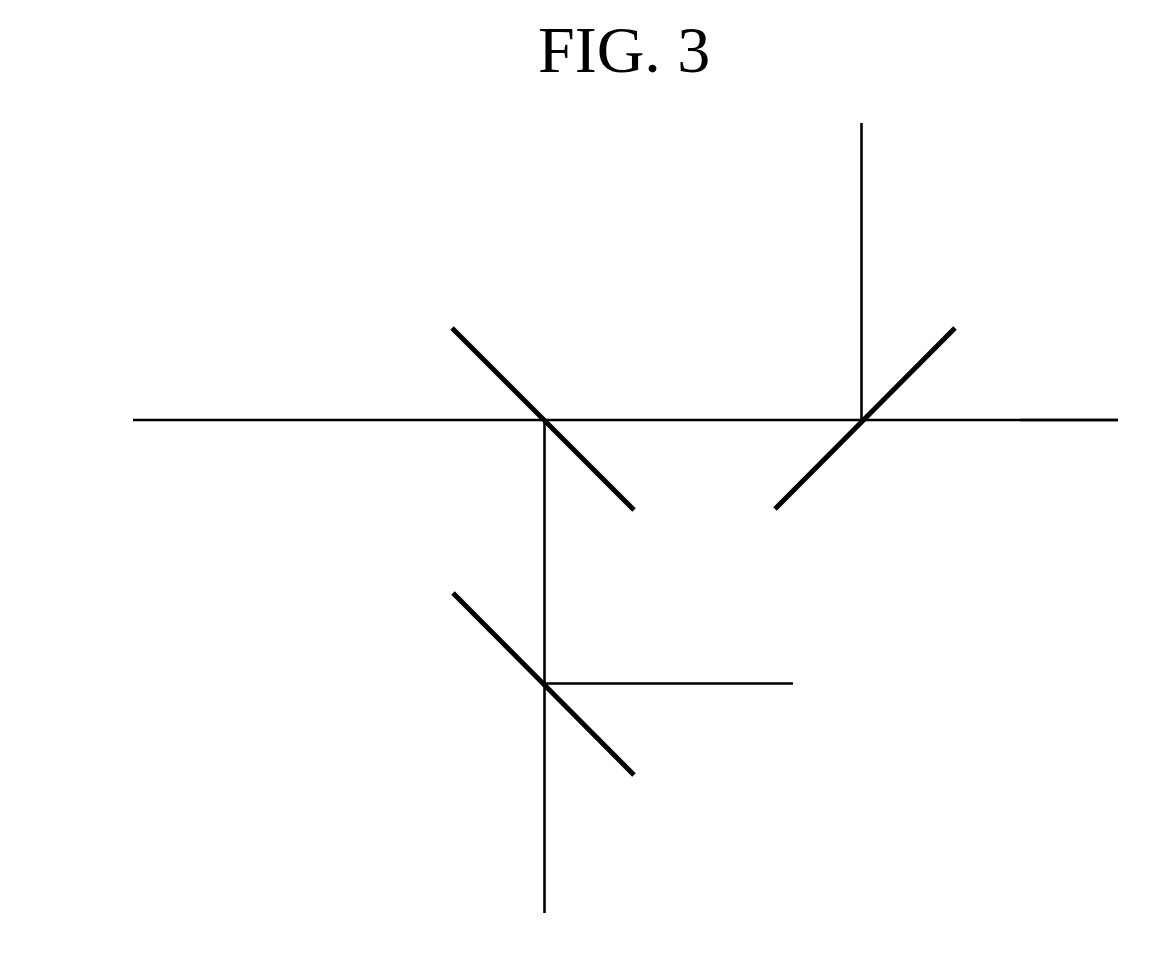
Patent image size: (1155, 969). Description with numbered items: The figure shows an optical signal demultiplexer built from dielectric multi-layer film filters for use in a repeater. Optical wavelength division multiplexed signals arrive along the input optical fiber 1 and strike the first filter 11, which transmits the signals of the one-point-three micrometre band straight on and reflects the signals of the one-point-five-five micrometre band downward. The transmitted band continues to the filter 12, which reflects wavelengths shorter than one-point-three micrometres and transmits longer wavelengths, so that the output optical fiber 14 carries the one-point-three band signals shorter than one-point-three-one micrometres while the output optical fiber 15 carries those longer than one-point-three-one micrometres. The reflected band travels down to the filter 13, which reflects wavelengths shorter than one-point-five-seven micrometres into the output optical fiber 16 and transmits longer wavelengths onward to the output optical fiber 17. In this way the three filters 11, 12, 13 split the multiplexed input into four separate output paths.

The input optical fiber 1 is at (275, 420).
The filter 11 is at (477, 345).
The filter 12 is at (802, 485).
The filter 13 is at (483, 627).
The output optical fiber 14 is at (862, 182).
The output optical fiber 15 is at (1030, 420).
The output optical fiber 16 is at (730, 684).
The output optical fiber 17 is at (544, 862).